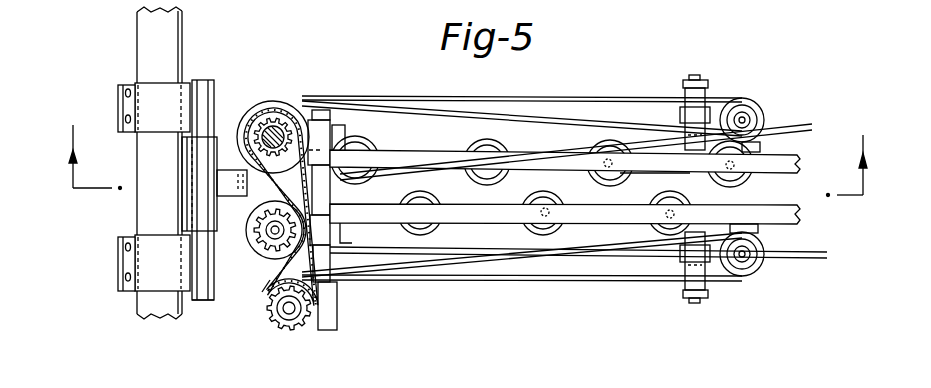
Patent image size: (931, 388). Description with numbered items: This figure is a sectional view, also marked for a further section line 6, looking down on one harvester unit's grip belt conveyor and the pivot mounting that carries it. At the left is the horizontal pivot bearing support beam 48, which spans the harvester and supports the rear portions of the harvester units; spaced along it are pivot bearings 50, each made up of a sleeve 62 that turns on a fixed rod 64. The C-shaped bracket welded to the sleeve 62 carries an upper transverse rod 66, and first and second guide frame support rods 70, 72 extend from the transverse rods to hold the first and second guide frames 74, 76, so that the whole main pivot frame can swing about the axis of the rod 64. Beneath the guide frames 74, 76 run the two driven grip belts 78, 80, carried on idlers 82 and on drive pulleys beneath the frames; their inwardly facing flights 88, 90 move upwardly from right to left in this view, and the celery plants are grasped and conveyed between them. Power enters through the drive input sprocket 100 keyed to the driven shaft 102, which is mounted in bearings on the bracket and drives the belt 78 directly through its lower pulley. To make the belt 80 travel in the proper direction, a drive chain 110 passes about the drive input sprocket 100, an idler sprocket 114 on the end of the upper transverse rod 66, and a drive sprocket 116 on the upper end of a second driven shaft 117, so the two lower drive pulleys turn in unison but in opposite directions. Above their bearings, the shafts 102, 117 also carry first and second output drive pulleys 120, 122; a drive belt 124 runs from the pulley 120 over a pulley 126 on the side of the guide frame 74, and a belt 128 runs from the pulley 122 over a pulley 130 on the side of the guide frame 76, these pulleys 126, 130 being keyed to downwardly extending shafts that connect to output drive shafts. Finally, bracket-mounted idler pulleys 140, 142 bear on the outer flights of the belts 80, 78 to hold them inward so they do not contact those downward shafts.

The section line 6- 6 is at (452, 161).
The pivot bearing support beam 48 is at (147, 42).
The pivot bearing 50 is at (216, 81).
The sleeve 62 is at (190, 207).
The fixed rod 64 is at (200, 301).
The upper transverse rod 66 is at (322, 280).
The first guide frame support rod 70 is at (341, 128).
The second guide frame support rod 72 is at (352, 243).
The first guide frame 74 is at (800, 166).
The second guide frame 76 is at (798, 218).
The grip belt 78 is at (793, 123).
The grip belt 80 is at (788, 250).
The idlers 82 is at (497, 145).
The inwardly facing flight 88 is at (647, 185).
The inwardly facing flight 90 is at (602, 192).
The drive input sprocket 100 is at (258, 128).
The driven shaft 102 is at (276, 134).
The drive chain 110 is at (280, 318).
The idler sprocket 114 is at (289, 326).
The drive sprocket 116 is at (263, 261).
The second driven shaft 117 is at (268, 233).
The first output drive pulley 120 is at (282, 100).
The second output drive pulley 122 is at (267, 294).
The drive belt 124 is at (585, 95).
The pulley 126 is at (745, 118).
The belt 128 is at (627, 279).
The pulley 130 is at (747, 275).
The idler pulley 140 is at (683, 258).
The idler pulley 142 is at (685, 112).